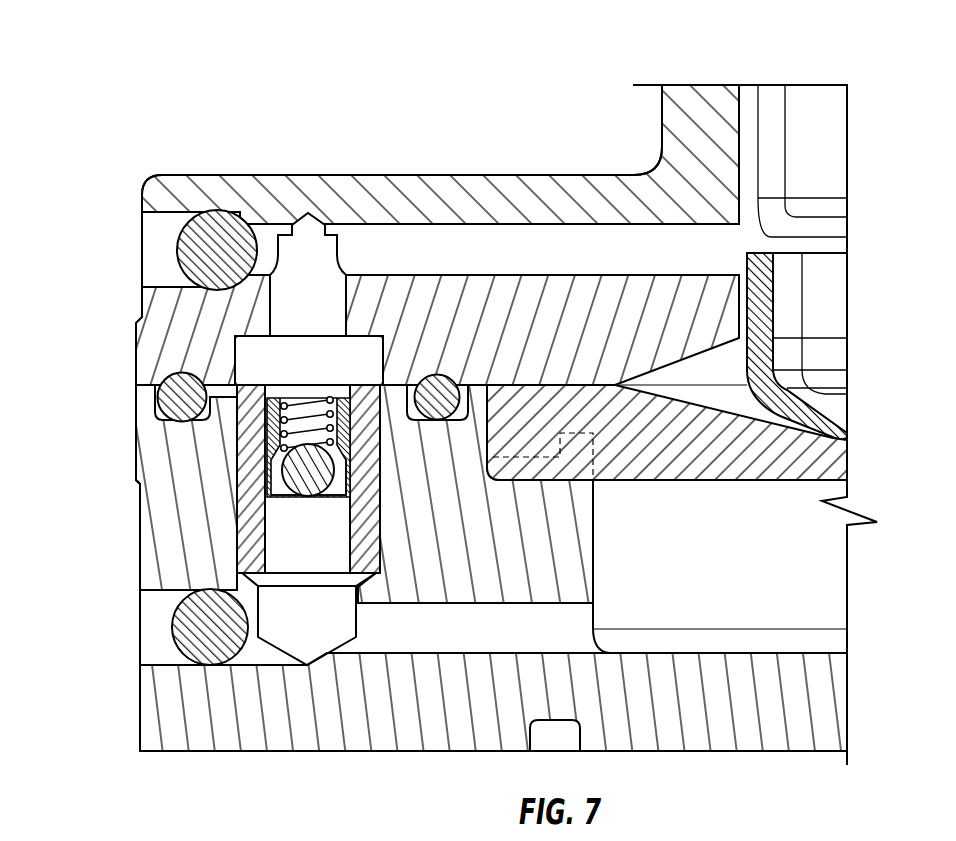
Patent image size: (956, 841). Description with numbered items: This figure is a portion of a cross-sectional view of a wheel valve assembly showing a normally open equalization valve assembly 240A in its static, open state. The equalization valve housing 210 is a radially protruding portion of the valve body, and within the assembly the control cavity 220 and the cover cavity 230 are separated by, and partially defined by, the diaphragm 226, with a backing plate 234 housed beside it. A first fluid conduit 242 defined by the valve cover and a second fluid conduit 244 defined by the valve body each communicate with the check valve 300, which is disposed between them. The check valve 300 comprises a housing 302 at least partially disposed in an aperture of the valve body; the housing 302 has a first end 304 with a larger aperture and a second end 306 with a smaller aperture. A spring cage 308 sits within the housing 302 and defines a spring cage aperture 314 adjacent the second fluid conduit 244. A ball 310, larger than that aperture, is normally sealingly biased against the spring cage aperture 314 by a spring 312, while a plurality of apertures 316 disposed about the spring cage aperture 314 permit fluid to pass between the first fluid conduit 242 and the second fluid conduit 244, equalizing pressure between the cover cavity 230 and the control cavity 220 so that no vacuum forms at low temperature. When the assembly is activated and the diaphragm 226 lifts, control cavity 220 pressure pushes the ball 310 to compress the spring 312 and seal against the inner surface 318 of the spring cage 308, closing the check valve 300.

The equalization valve assembly 240A is at (93, 194).
The equalization valve housing 210 is at (173, 483).
The control cavity 220 is at (823, 585).
The diaphragm 226 is at (810, 450).
The cover cavity 230 is at (813, 108).
The backing plate 234 is at (760, 272).
The first fluid conduit 242 is at (465, 238).
The second fluid conduit 244 is at (402, 635).
The check valve 300 is at (196, 391).
The housing 302 is at (235, 390).
The first end 304 is at (240, 571).
The second end 306 is at (258, 397).
The spring cage 308 is at (274, 468).
The ball 310 is at (310, 497).
The spring 312 is at (278, 438).
The spring cage aperture 314 is at (297, 500).
The apertures 316 is at (338, 502).
The inner surface 318 is at (340, 442).